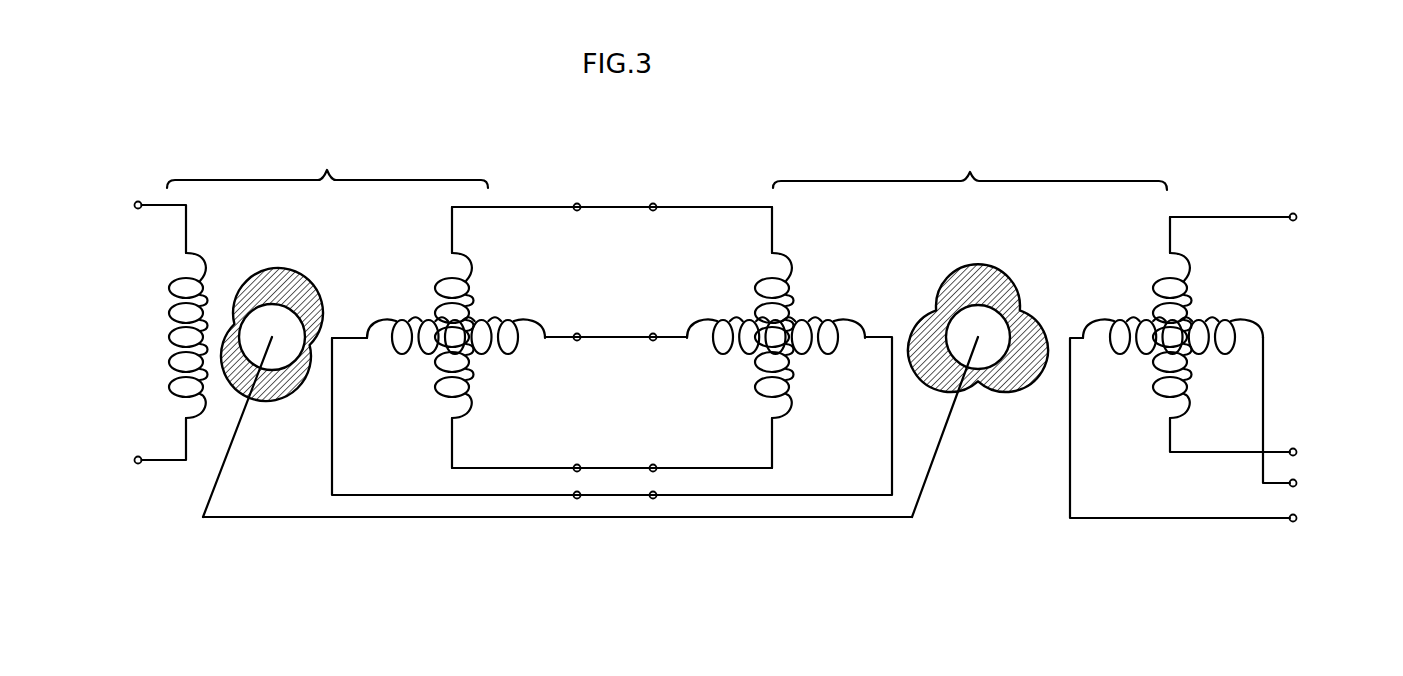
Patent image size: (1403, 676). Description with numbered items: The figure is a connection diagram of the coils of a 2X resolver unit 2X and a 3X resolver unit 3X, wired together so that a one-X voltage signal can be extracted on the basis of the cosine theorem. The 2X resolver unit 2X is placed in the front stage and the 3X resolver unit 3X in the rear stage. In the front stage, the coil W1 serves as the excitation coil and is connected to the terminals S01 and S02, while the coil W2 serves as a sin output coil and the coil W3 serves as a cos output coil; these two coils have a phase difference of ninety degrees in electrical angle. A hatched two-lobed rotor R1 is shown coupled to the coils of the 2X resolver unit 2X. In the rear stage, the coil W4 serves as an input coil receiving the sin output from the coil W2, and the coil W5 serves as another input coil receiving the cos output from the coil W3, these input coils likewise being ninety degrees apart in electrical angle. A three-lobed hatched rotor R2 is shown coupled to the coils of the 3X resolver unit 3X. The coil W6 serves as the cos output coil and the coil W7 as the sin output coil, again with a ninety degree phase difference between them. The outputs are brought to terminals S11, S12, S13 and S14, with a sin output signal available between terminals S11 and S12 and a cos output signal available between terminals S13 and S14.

The excitation coil W1 is at (175, 335).
The sin output coil W2 is at (427, 320).
The cos output coil W3 is at (453, 282).
The input coil W4 is at (733, 323).
The input coil W5 is at (762, 282).
The cos output coil W6 is at (1120, 320).
The sin output coil W7 is at (1162, 280).
The 2X resolver rotor R1 is at (290, 270).
The 3X resolver rotor R2 is at (998, 277).
The excitation terminal S01 is at (109, 203).
The excitation terminal S02 is at (109, 459).
The sin output terminal S11 is at (1317, 217).
The sin output terminal S12 is at (1317, 452).
The cos output terminal S13 is at (1317, 483).
The cos output terminal S14 is at (1317, 518).
The 2X resolver unit 2X is at (327, 161).
The 3X resolver unit 3X is at (970, 162).